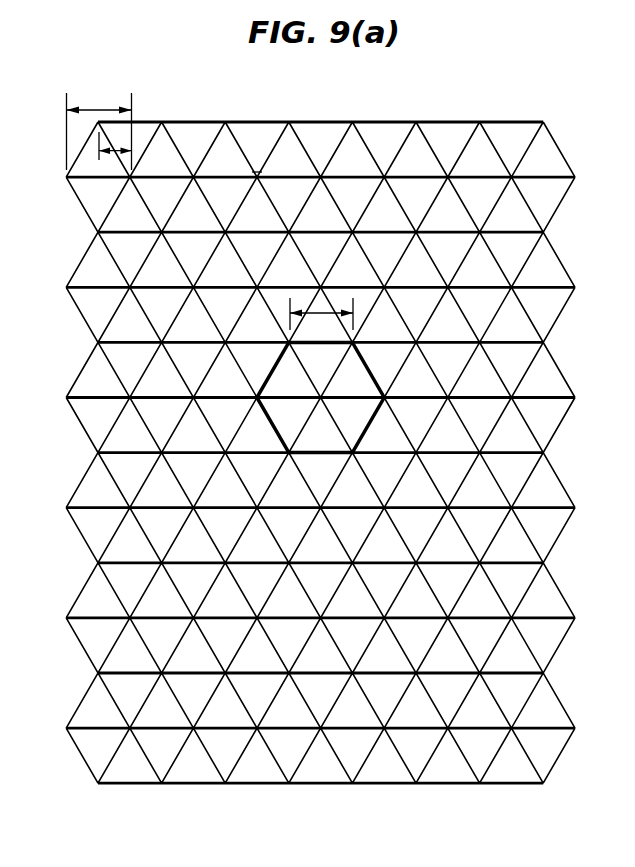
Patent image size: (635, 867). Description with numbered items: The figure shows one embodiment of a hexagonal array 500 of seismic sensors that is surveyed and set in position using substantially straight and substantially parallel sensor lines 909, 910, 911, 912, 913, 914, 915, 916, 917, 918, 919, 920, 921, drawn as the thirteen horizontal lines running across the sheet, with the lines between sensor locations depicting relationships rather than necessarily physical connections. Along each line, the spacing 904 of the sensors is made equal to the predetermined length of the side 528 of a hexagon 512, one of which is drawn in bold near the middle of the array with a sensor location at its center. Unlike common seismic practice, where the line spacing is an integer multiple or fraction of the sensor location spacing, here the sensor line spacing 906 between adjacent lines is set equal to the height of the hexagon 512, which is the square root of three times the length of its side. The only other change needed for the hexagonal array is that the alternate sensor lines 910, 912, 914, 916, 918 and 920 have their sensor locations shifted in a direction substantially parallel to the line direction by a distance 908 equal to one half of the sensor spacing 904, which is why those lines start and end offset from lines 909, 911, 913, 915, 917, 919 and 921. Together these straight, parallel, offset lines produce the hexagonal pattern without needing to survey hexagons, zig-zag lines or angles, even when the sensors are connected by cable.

The hexagonal array 500 is at (576, 135).
The spacing of sensors 904 is at (110, 110).
The sensor line spacing 906 is at (258, 162).
The distance 908 is at (114, 153).
The sensor line 909 is at (521, 124).
The sensor line 910 is at (557, 178).
The sensor line 911 is at (521, 234).
The sensor line 912 is at (557, 288).
The sensor line 913 is at (521, 344).
The sensor line 914 is at (557, 398).
The sensor line 915 is at (521, 454).
The sensor line 916 is at (557, 508).
The sensor line 917 is at (521, 564).
The sensor line 918 is at (557, 618).
The sensor line 919 is at (521, 674).
The sensor line 920 is at (557, 730).
The sensor line 921 is at (520, 784).
The hexagon 512 is at (368, 369).
The side of hexagon 528 is at (322, 312).